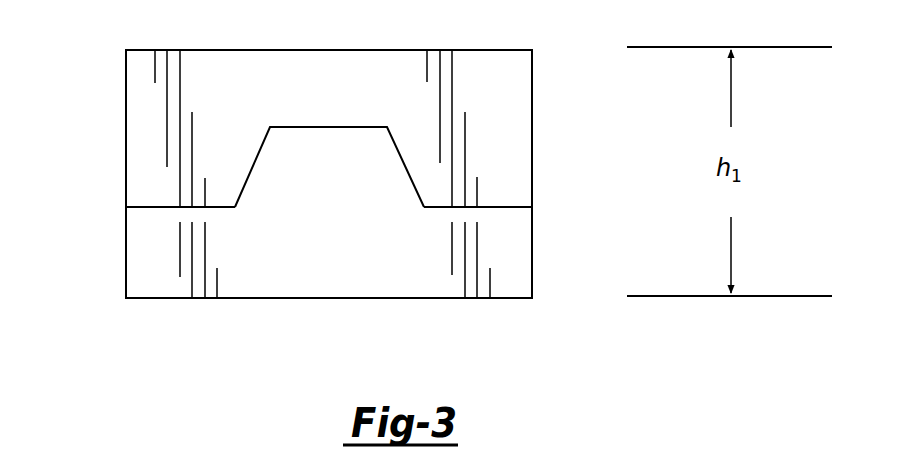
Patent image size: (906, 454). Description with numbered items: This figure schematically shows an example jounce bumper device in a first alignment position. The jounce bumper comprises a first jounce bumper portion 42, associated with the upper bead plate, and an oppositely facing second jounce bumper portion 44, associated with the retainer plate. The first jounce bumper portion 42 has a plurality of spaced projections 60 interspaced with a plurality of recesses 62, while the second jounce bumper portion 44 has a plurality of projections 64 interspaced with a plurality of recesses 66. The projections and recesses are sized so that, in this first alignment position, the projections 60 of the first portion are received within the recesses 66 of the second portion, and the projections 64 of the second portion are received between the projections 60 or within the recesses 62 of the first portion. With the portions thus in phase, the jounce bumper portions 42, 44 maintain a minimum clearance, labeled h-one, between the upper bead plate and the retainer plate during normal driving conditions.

The first jounce bumper portion 42 is at (124, 90).
The second jounce bumper portion 44 is at (124, 275).
The projections 60 is at (523, 138).
The recesses 62 is at (323, 127).
The projections 64 is at (310, 203).
The recesses 66 is at (152, 207).